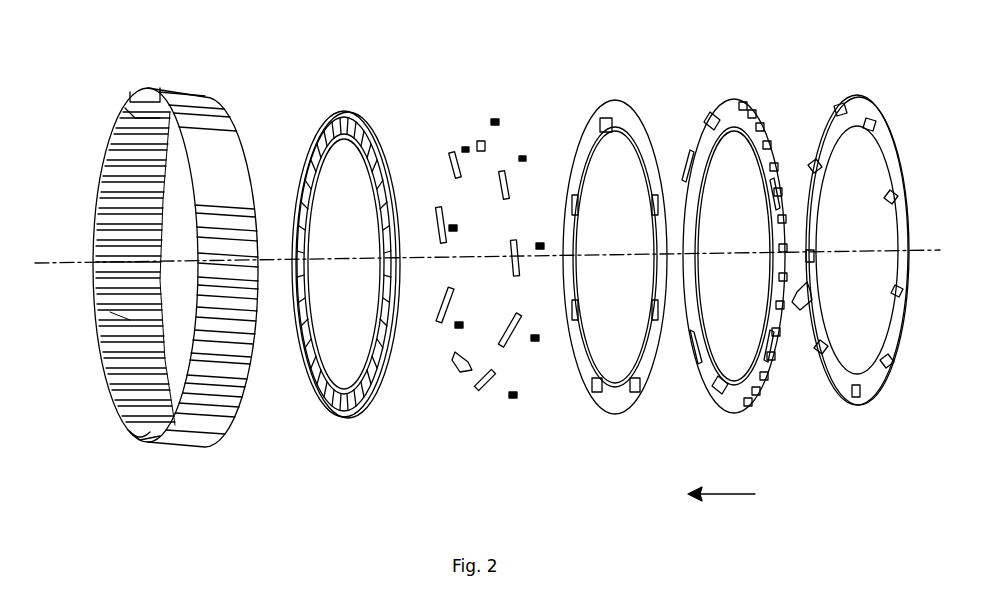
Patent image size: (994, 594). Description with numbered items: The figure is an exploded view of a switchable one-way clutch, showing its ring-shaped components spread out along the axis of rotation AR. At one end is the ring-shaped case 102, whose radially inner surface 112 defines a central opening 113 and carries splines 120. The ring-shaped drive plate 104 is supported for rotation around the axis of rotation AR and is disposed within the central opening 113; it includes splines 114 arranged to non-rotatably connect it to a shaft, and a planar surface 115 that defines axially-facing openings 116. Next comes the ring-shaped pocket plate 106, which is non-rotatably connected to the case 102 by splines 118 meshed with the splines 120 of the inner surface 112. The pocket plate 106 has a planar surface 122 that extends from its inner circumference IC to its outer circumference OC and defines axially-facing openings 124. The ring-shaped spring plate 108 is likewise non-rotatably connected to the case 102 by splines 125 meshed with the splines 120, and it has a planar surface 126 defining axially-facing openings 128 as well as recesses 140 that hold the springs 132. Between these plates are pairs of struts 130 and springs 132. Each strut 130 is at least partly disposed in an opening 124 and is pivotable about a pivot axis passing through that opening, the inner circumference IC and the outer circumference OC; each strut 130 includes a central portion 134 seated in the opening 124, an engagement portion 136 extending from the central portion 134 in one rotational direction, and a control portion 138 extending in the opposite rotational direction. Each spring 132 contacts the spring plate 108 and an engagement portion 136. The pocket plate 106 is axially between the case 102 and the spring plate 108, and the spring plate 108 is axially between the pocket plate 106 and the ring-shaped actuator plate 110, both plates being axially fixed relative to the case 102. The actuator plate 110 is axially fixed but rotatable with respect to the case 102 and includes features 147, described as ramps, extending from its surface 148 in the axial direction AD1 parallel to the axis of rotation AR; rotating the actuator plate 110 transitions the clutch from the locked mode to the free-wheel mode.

The case 102 is at (143, 249).
The drive plate 104 is at (333, 217).
The pocket plate 106 is at (610, 248).
The spring plate 108 is at (743, 248).
The actuator plate 110 is at (860, 248).
The radially inner surface 112 is at (120, 320).
The central opening 113 is at (175, 178).
The splines 114 is at (310, 285).
The planar surface 115 is at (312, 118).
The axially-facing openings 116 is at (348, 116).
The splines 118 is at (640, 408).
The splines 120 is at (140, 432).
The planar surface 122 is at (598, 128).
The axially-facing openings 124 is at (607, 112).
The splines 125 is at (770, 393).
The planar surface 126 is at (705, 120).
The axially-facing openings 128 is at (730, 98).
The struts 130 is at (440, 208).
The springs 132 is at (495, 118).
The central portion 134 is at (470, 380).
The engagement portion 136 is at (455, 362).
The control portion 138 is at (485, 392).
The recesses 140 is at (745, 408).
The features 147 is at (870, 122).
The surface 148 is at (868, 402).
The axis of rotation AR is at (66, 255).
The inner circumference IC is at (595, 295).
The outer circumference OC is at (605, 416).
The axial direction AD1 is at (732, 498).